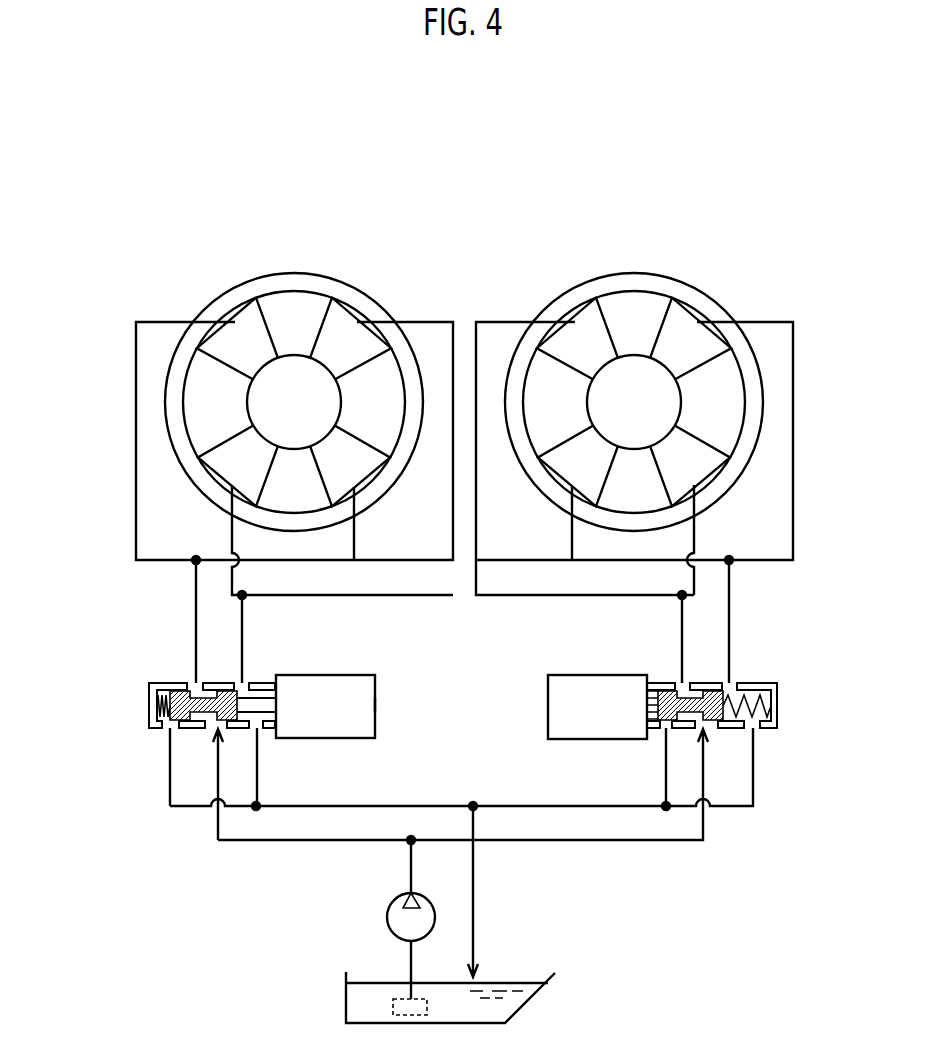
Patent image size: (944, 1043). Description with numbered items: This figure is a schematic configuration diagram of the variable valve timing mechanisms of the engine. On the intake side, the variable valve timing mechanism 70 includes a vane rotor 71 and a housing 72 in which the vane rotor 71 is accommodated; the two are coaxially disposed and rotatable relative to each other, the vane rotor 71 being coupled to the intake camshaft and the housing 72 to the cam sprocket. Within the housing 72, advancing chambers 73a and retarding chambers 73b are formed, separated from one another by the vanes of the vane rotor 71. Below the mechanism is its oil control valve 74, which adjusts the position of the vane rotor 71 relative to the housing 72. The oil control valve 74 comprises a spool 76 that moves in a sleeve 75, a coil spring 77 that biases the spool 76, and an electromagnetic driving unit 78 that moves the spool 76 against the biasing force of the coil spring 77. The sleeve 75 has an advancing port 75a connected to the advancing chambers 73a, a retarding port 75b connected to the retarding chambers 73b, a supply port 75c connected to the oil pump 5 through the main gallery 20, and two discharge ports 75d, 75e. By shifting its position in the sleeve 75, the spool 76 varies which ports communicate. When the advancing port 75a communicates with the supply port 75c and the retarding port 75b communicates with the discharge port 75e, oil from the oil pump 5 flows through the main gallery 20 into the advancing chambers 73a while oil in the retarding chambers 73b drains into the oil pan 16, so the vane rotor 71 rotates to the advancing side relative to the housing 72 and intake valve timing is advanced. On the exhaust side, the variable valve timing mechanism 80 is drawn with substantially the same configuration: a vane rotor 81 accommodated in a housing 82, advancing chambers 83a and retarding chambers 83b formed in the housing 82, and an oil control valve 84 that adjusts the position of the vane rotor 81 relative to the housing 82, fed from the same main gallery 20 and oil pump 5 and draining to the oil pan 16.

The variable valve timing mechanism 70 is at (280, 258).
The vane rotor 71 is at (302, 300).
The housing 72 is at (217, 312).
The advancing chambers 73a is at (248, 318).
The retarding chambers 73b is at (343, 317).
The oil control valve 74 is at (343, 675).
The sleeve 75 is at (164, 684).
The advancing port 75a is at (199, 682).
The retarding port 75b is at (245, 685).
The supply port 75c is at (213, 727).
The discharge port 75d is at (170, 727).
The discharge port 75e is at (258, 725).
The spool 76 is at (158, 698).
The coil spring 77 is at (160, 708).
The electromagnetic driving unit 78 is at (376, 705).
The variable valve timing mechanism 80 is at (620, 258).
The vane rotor 81 is at (642, 300).
The housing 82 is at (557, 312).
The advancing chambers 83a is at (588, 318).
The retarding chambers 83b is at (683, 317).
The oil control valve 84 is at (598, 675).
The main gallery 20 is at (295, 845).
The oil pump 5 is at (388, 917).
The oil pan 16 is at (530, 1000).